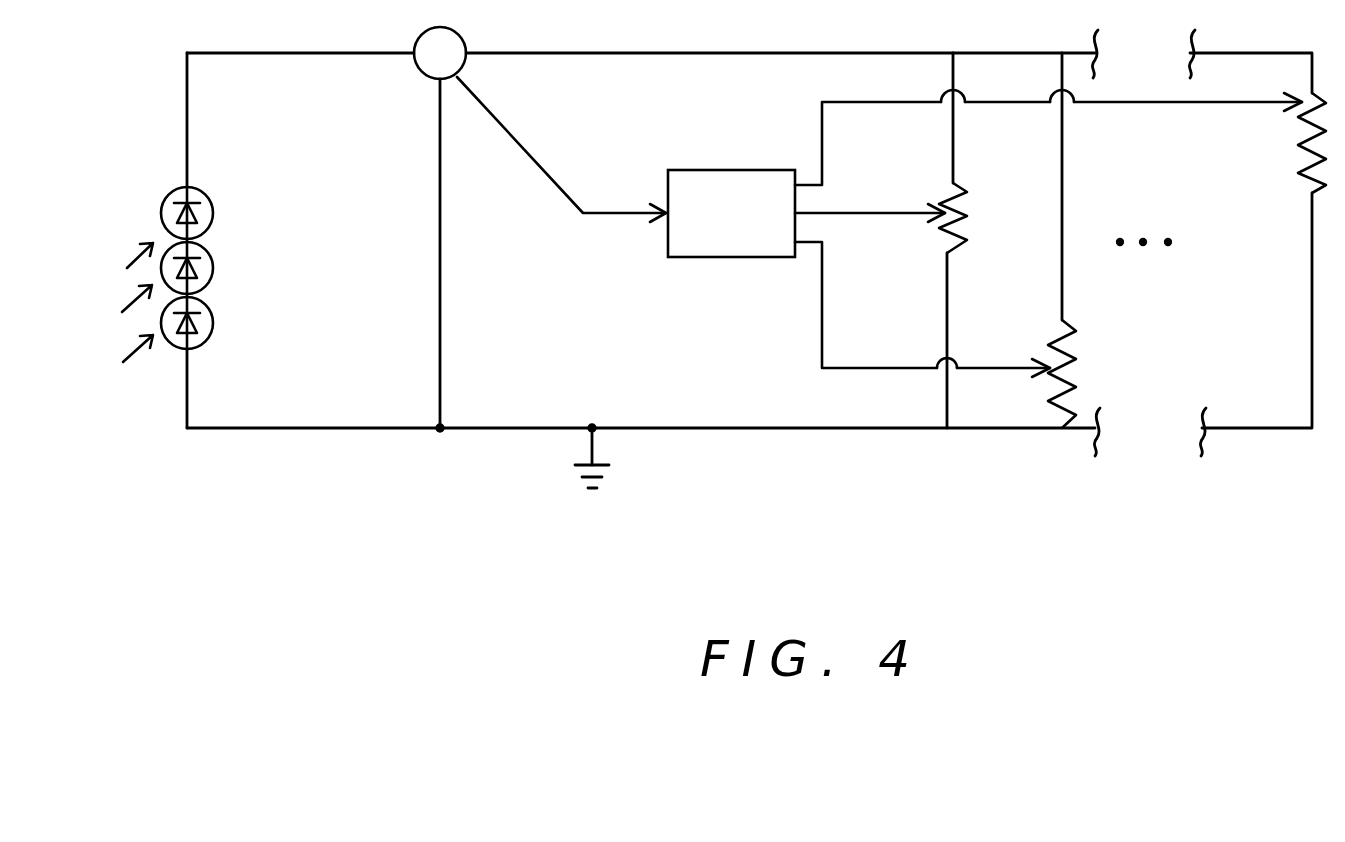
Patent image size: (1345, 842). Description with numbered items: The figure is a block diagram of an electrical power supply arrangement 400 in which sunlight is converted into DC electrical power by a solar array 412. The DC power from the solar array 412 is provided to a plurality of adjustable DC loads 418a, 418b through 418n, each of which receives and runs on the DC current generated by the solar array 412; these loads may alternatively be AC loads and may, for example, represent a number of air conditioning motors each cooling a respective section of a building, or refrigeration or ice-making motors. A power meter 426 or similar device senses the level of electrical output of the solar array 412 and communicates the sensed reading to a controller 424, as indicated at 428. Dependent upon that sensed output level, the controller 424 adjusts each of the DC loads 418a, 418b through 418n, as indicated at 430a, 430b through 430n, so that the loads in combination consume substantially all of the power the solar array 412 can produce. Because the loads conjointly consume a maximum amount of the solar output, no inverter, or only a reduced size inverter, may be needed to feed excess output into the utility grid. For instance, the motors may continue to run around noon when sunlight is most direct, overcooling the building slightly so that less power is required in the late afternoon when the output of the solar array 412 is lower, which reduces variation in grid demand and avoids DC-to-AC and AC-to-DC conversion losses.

The electrical power supply arrangement 400 is at (262, 520).
The solar array 412 is at (165, 185).
The DC load 418a is at (950, 245).
The DC load 418b is at (1070, 345).
The DC load 418n is at (1312, 170).
The controller 424 is at (730, 257).
The power meter 426 is at (425, 80).
The communication of sensed reading 428 is at (610, 212).
The adjustment of DC load 430a is at (857, 212).
The adjustment of DC load 430b is at (822, 340).
The adjustment of DC load 430n is at (822, 128).